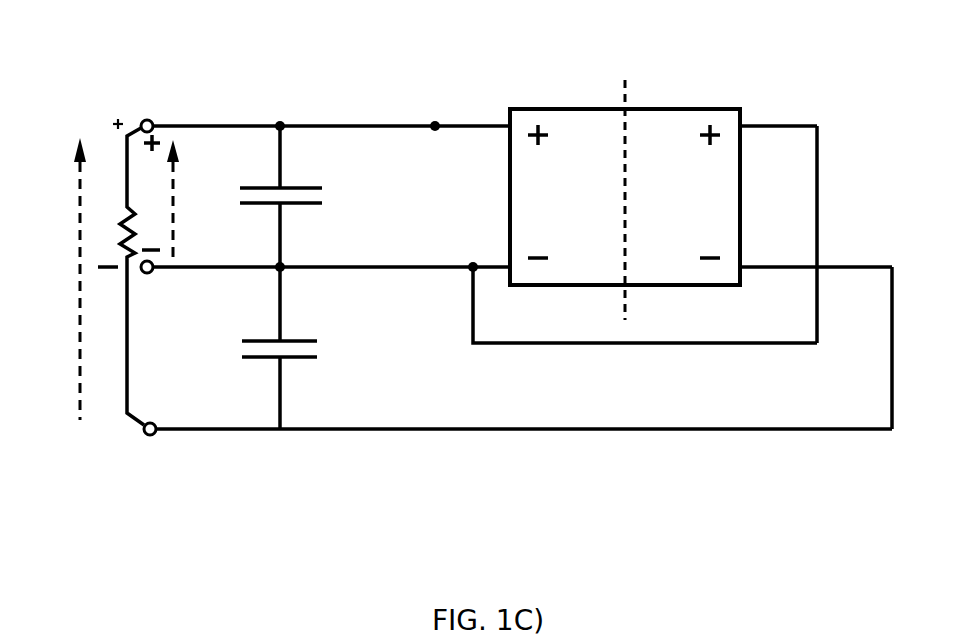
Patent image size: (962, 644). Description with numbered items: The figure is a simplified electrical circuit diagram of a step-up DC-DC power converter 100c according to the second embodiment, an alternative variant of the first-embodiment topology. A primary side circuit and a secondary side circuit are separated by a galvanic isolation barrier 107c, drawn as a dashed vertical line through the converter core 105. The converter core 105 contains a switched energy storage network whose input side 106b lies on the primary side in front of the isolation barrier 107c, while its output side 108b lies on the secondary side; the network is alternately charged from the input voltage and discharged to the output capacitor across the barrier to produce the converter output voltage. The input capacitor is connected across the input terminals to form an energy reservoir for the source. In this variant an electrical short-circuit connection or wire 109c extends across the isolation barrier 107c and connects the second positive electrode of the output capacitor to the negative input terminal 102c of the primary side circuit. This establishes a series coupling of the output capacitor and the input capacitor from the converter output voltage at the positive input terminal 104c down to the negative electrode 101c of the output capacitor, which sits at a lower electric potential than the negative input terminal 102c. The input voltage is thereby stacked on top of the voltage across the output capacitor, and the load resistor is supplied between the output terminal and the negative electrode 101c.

The step-up DC-DC power converter 100c is at (479, 330).
The negative electrode of the output capacitor 101c is at (190, 447).
The negative input terminal 102c is at (190, 284).
The positive input terminal 104c is at (107, 108).
The converter core 105 is at (610, 155).
The input side of the switched energy storage network 106b is at (567, 197).
The isolation barrier 107c is at (575, 205).
The output side of the switched energy storage network 108b is at (682, 197).
The electrical short-circuit connection or wire 109c is at (645, 324).